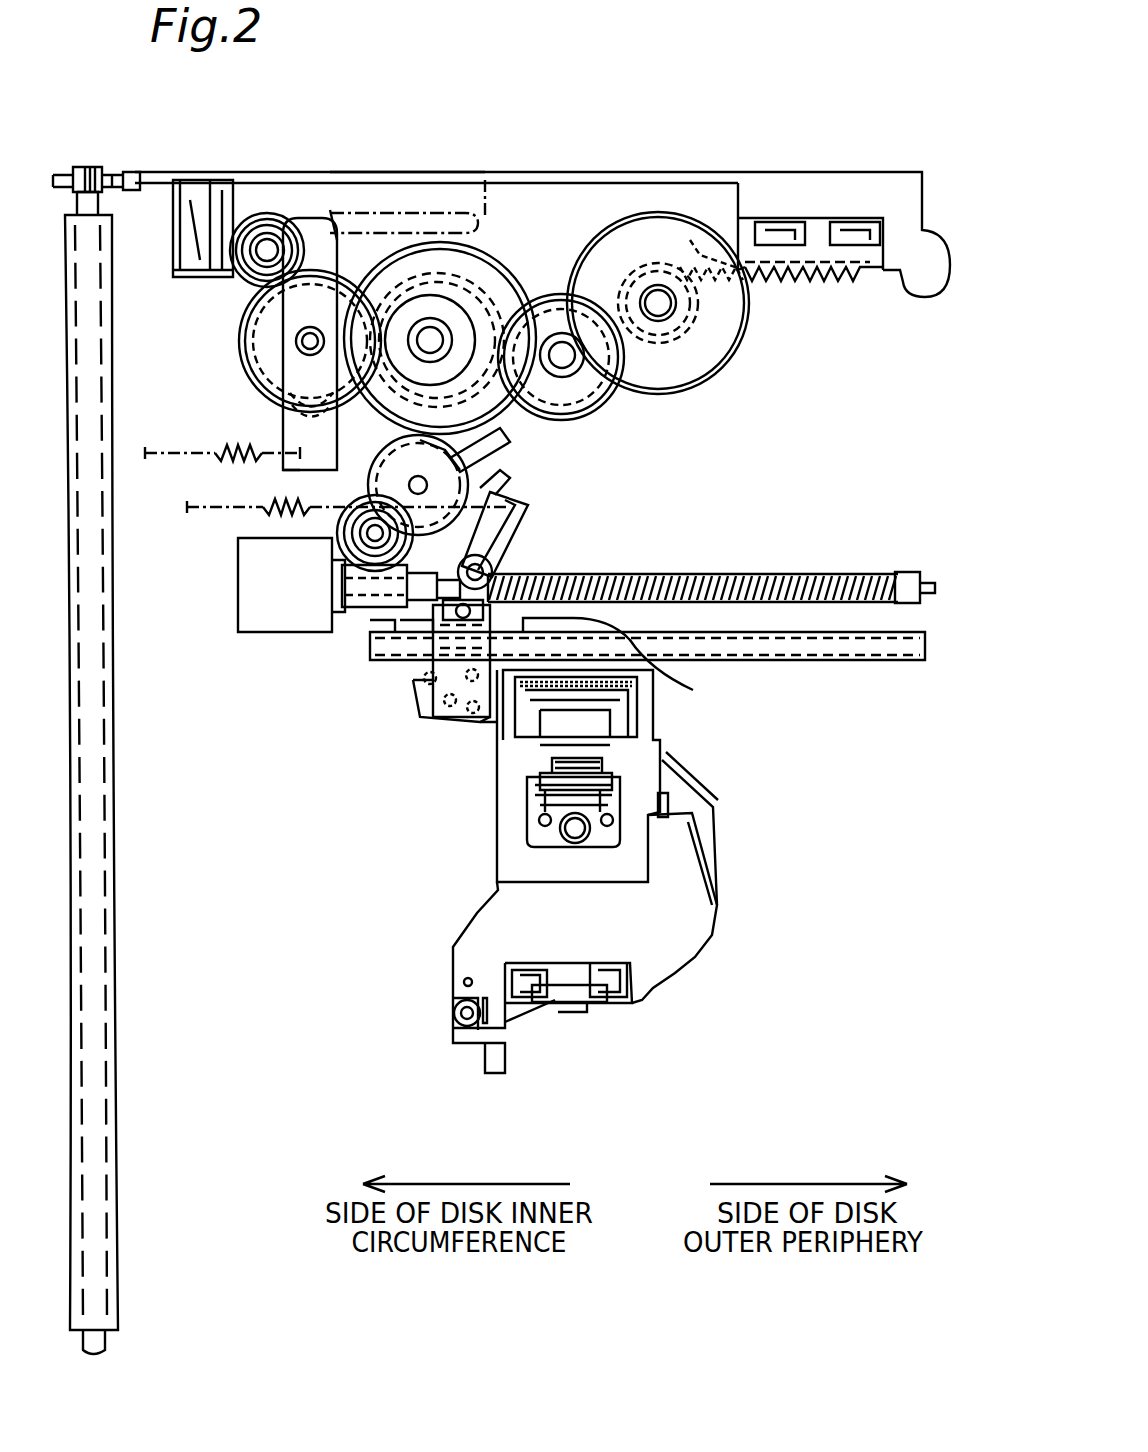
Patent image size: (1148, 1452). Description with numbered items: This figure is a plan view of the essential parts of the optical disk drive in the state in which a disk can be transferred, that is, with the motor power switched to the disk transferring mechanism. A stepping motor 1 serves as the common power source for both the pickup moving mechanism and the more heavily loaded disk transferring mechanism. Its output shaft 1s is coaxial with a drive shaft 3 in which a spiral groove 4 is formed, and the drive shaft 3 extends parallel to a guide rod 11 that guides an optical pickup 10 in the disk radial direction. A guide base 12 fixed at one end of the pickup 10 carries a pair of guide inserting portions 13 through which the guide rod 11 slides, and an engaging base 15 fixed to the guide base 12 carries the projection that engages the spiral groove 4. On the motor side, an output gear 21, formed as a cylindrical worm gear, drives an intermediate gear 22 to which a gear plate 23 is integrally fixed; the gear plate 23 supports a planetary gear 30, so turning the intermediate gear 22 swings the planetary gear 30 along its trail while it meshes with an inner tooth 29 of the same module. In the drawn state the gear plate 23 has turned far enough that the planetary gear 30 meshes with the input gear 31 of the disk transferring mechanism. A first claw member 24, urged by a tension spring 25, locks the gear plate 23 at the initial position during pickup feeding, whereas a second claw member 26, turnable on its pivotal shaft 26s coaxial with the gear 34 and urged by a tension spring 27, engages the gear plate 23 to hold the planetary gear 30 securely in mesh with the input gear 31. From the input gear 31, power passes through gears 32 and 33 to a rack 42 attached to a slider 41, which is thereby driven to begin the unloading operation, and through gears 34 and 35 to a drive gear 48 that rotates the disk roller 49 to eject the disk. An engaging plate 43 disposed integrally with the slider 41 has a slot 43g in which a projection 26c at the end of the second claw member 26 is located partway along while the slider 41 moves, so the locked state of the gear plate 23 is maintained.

The stepping motor 1 is at (238, 590).
The output shaft 1s is at (330, 588).
The drive shaft 3 is at (906, 560).
The spiral groove 4 is at (695, 575).
The optical pickup 10 is at (495, 824).
The guide rod 11 is at (848, 660).
The guide base 12 is at (433, 697).
The guide inserting portions 13 is at (395, 655).
The engaging base 15 is at (440, 722).
The output gear 21 is at (362, 608).
The intermediate gear 22 is at (360, 510).
The gear plate 23 is at (490, 498).
The first claw member 24 is at (500, 530).
The tension spring 25 is at (242, 525).
The second claw member 26 is at (261, 285).
The projection 26c is at (330, 215).
The pivotal shaft 26s is at (288, 388).
The tension spring 27 is at (245, 458).
The inner tooth 29 is at (508, 440).
The planetary gear 30 is at (468, 494).
The input gear 31 is at (485, 275).
The gear 32 is at (604, 398).
The gear 33 is at (713, 357).
The gear 34 is at (258, 350).
The gear 35 is at (241, 278).
The slider 41 is at (548, 170).
The rack 42 is at (810, 277).
The engaging plate 43 is at (485, 180).
The slot 43g is at (390, 215).
The drive gear 48 is at (173, 225).
The disk roller 49 is at (113, 792).